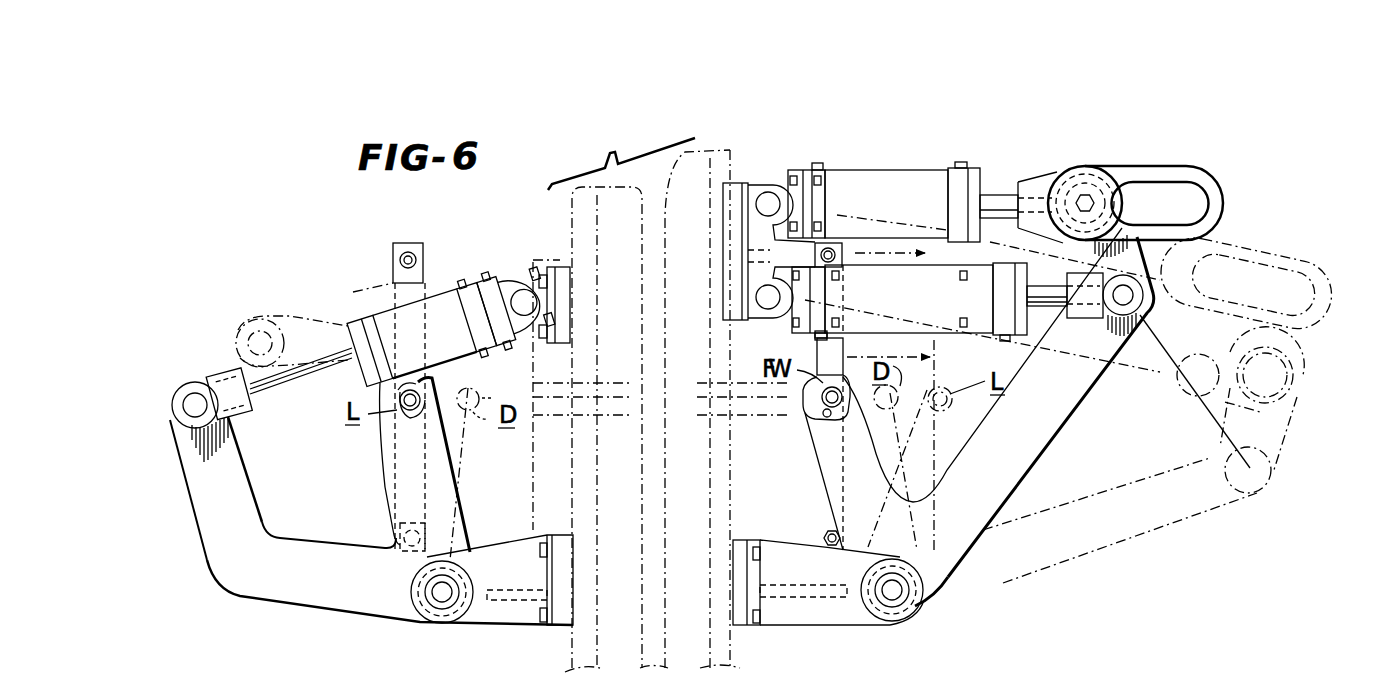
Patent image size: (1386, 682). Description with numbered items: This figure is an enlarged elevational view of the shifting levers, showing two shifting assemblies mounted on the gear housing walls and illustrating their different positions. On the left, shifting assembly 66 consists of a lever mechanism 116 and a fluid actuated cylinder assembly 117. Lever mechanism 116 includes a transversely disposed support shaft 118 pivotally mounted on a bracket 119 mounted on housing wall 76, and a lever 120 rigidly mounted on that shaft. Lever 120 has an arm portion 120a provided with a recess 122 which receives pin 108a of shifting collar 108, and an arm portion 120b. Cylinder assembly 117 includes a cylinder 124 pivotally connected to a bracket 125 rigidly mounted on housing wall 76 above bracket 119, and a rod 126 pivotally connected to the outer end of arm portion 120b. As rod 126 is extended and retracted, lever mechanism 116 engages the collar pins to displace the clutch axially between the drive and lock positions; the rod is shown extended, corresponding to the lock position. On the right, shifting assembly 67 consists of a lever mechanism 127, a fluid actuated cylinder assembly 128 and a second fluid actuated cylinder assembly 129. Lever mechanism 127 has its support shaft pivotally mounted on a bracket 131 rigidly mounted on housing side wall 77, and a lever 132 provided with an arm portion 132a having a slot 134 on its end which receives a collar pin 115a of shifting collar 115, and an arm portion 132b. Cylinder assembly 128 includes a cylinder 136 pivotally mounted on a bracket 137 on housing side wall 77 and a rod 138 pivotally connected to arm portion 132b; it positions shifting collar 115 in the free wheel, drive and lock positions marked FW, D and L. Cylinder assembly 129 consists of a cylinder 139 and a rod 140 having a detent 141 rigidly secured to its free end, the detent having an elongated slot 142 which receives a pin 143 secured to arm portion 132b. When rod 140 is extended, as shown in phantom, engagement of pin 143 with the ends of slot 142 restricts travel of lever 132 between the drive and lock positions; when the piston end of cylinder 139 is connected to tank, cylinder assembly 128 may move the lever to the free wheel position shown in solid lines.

The shifting assembly 66 is at (203, 545).
The shifting assembly 67 is at (1064, 433).
The housing wall 76 is at (599, 508).
The housing side wall 77 is at (710, 548).
The shifting collar 108 is at (393, 281).
The pin 108a is at (408, 412).
The shifting collar 115 is at (817, 352).
The collar pin 115a is at (822, 400).
The lever mechanism 116 is at (292, 607).
The fluid actuated cylinder assembly 117 is at (352, 316).
The support shaft 118 is at (436, 618).
The bracket 119 is at (502, 617).
The lever 120 is at (442, 484).
The arm portion 120a is at (393, 492).
The arm portion 120b is at (198, 482).
The recess 122 is at (434, 379).
The cylinder 124 is at (466, 344).
The bracket 125 is at (566, 305).
The rod 126 is at (290, 393).
The lever mechanism 127 is at (960, 578).
The fluid actuated cylinder assembly 128 is at (952, 340).
The second fluid actuated cylinder assembly 129 is at (892, 166).
The bracket 131 is at (811, 617).
The lever 132 is at (1077, 393).
The arm portion 132a is at (842, 485).
The arm portion 132b is at (1007, 477).
The slot 134 is at (823, 416).
The cylinder 136 is at (912, 299).
The bracket 137 is at (725, 263).
The rod 138 is at (1053, 320).
The cylinder 139 is at (912, 205).
The rod 140 is at (993, 196).
The detent 141 is at (1182, 167).
The elongated slot 142 is at (1190, 192).
The pin 143 is at (1083, 185).